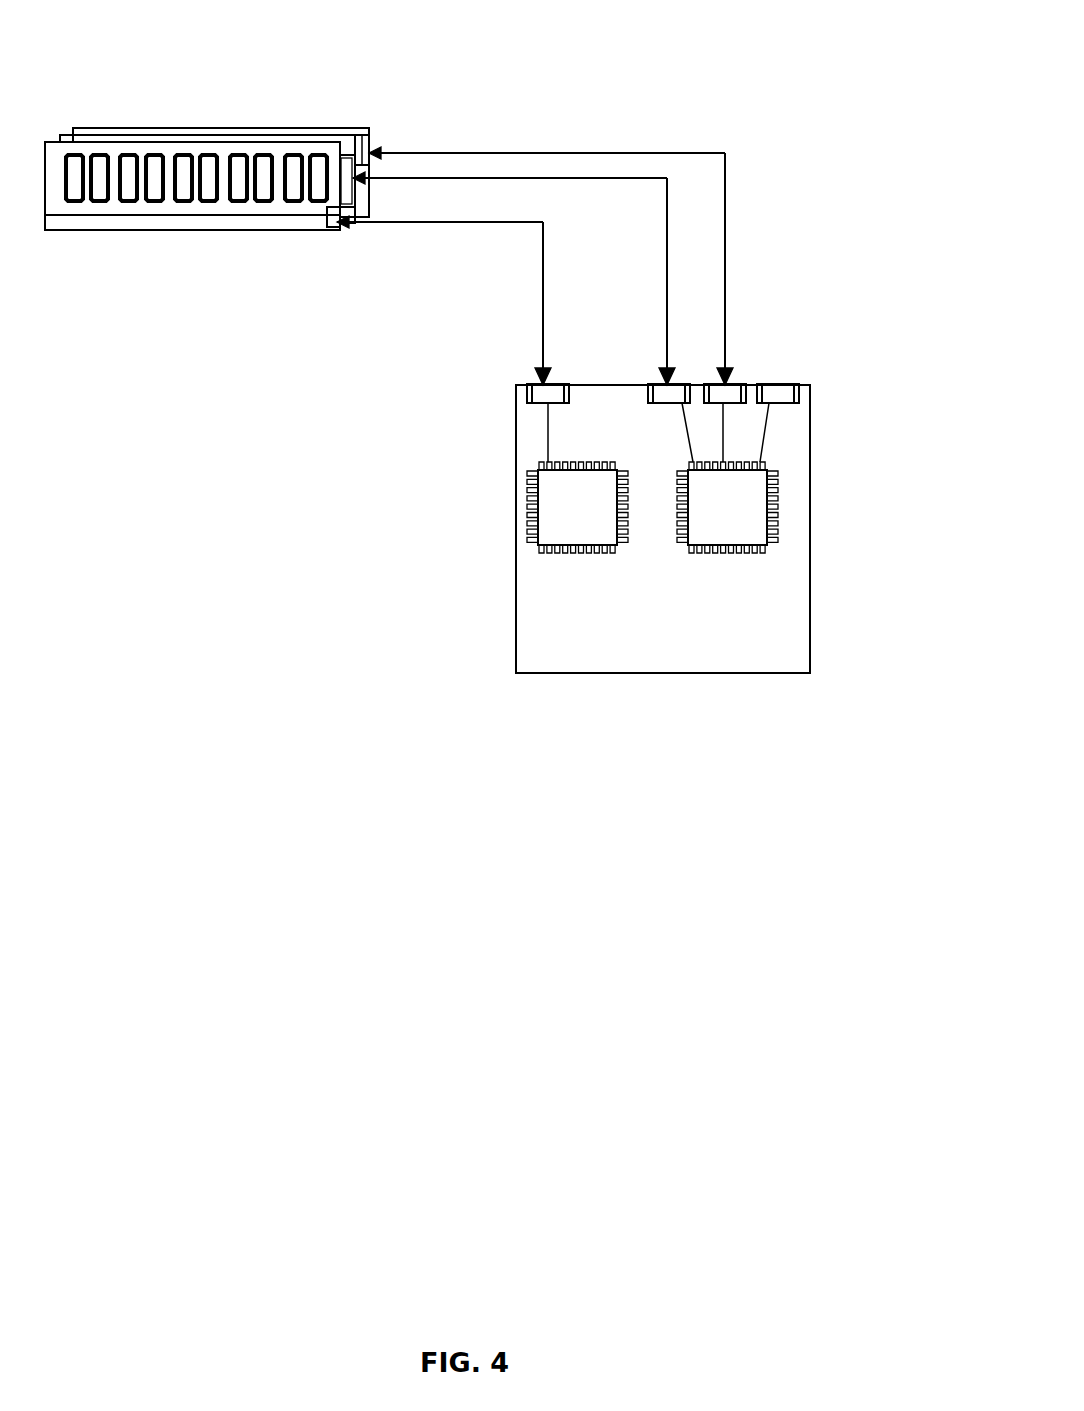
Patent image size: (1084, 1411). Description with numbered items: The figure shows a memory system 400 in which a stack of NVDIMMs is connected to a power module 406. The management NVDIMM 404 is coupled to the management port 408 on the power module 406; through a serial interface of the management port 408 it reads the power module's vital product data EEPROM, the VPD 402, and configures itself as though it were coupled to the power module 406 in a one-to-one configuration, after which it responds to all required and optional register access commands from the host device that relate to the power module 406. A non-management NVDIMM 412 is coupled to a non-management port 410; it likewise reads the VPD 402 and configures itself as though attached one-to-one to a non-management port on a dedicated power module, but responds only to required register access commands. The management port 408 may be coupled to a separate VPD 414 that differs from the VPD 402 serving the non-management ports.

The memory system 400 is at (869, 84).
The vital product data EEPROM (VPD) 402 is at (745, 536).
The management NVDIMM 404 is at (190, 232).
The power module 406 is at (810, 532).
The management port 408 is at (520, 387).
The non-management port 410 is at (733, 382).
The non-management NVDIMM 412 is at (115, 130).
The VPD 414 is at (592, 536).